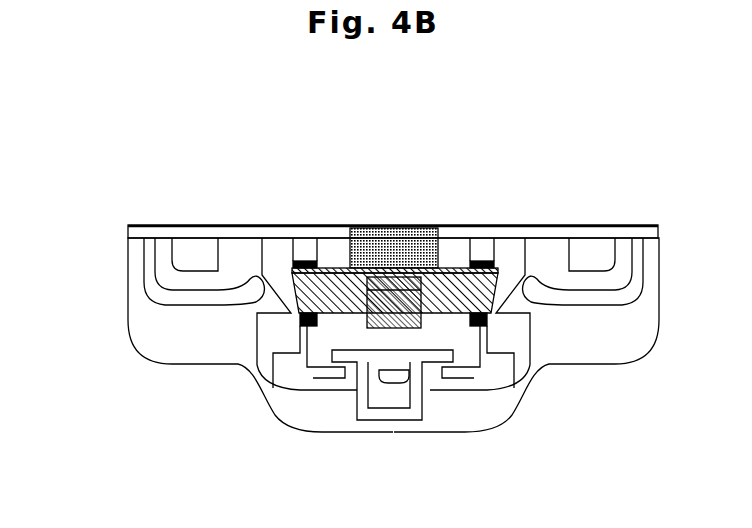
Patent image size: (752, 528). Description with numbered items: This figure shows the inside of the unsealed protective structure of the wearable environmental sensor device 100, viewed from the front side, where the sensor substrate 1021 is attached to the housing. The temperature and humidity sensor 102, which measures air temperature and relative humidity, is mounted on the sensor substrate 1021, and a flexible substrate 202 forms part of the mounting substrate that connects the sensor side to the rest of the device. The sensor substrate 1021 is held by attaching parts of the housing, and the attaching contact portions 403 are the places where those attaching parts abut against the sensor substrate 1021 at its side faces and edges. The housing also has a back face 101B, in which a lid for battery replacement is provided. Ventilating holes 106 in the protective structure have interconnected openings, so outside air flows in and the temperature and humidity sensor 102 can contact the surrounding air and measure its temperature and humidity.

The environmental sensor device 100 is at (371, 161).
The back face 101B is at (128, 287).
The sensor substrate 1021 is at (253, 238).
The temperature and humidity sensor 102 is at (378, 268).
The flexible substrate 202 is at (403, 255).
The attaching contact portions 403 is at (293, 264).
The ventilating holes 106 is at (393, 382).